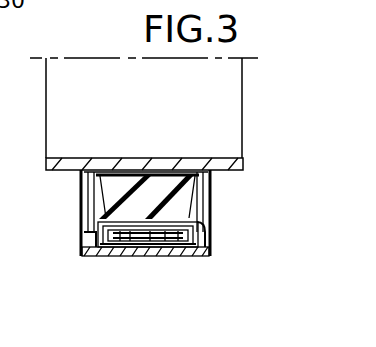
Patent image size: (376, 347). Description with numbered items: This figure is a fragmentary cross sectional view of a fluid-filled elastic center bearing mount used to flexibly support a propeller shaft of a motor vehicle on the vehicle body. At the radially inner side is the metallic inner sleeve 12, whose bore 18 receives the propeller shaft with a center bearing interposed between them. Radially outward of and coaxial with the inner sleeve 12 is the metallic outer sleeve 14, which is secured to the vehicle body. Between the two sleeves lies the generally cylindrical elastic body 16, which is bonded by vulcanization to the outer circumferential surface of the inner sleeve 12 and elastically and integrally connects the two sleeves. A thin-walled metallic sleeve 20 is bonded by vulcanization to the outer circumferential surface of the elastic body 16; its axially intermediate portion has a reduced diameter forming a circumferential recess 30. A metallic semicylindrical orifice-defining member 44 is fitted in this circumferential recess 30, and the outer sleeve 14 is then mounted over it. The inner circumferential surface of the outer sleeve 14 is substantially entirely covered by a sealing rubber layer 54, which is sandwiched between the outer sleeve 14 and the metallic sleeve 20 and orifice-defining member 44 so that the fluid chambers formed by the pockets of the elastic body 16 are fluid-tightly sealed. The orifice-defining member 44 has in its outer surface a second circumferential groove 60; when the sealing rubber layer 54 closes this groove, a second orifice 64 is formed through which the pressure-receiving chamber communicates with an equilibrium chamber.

The inner sleeve 12 is at (223, 170).
The bore 18 is at (109, 158).
The elastic body 16 is at (76, 212).
The outer sleeve 14 is at (112, 258).
The sealing rubber layer 54 is at (90, 258).
The orifice-defining member 44 is at (125, 258).
The second circumferential groove 60 is at (168, 258).
The second orifice 64 is at (142, 258).
The circumferential recess 30 is at (173, 257).
The metallic sleeve 20 is at (207, 258).